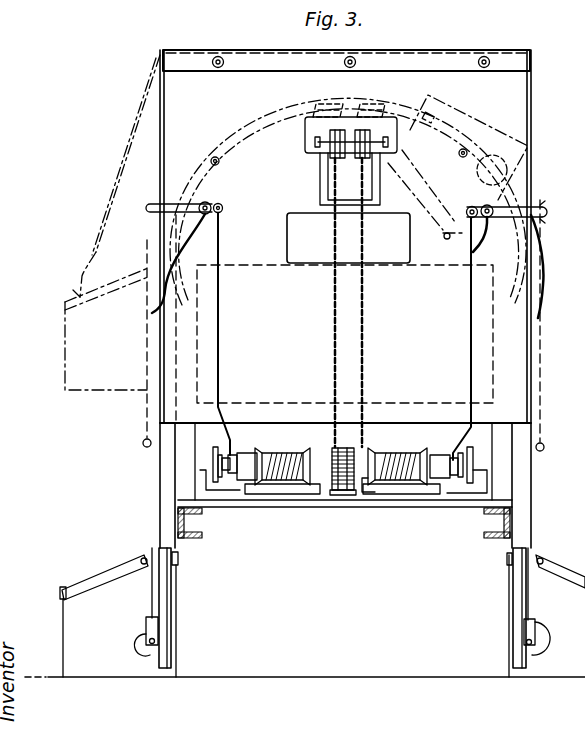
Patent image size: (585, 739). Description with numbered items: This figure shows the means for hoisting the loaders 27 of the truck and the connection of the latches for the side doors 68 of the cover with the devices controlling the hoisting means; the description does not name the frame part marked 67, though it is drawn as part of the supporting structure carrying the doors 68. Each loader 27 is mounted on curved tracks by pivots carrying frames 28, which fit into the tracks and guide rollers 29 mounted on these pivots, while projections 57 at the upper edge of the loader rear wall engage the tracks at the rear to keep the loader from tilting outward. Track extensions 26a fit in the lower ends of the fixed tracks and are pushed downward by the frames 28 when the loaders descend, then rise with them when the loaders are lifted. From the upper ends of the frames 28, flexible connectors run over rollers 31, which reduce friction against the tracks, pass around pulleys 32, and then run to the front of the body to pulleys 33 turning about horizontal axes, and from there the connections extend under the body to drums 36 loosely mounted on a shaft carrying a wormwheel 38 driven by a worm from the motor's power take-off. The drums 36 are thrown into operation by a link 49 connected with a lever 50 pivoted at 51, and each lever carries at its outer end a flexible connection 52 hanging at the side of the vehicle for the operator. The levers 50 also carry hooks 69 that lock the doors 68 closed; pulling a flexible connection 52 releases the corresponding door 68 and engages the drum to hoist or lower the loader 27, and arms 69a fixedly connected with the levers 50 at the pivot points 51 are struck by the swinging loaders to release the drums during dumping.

The top cross bar of frame 67 is at (281, 58).
The doors 68 is at (160, 157).
The track extensions 26a is at (165, 632).
The projections 57 is at (178, 558).
The frames 28 is at (146, 627).
The rollers 29 is at (142, 648).
The loaders 27 is at (53, 347).
The flexible connection 52 is at (146, 410).
The pulleys 32 is at (374, 104).
The pulleys 33 is at (333, 143).
The lever 50 is at (170, 204).
The hooks 69 is at (541, 213).
The pivot 51 is at (209, 216).
The rollers 31 is at (214, 158).
The link 49 is at (219, 347).
The arms 69a is at (483, 258).
The drums 36 is at (283, 460).
The wormwheel 38 is at (346, 492).